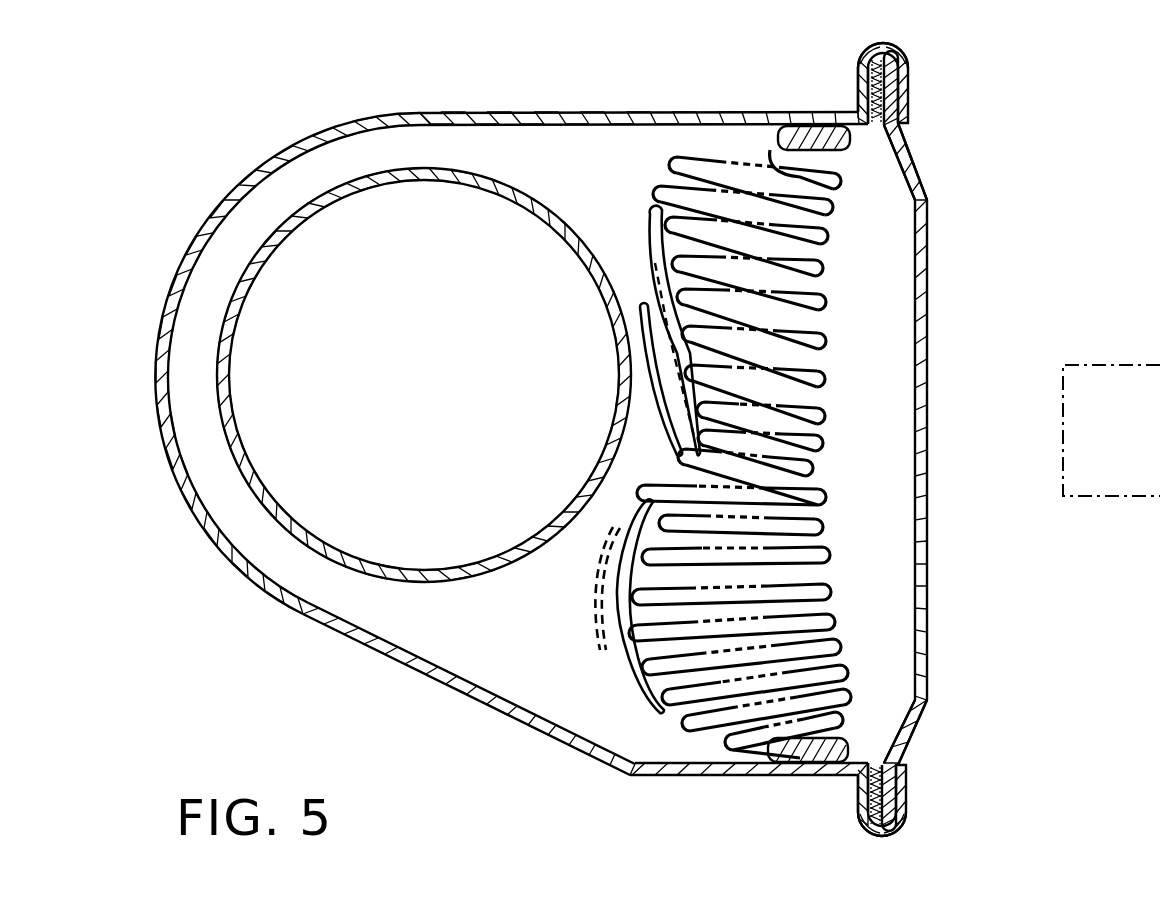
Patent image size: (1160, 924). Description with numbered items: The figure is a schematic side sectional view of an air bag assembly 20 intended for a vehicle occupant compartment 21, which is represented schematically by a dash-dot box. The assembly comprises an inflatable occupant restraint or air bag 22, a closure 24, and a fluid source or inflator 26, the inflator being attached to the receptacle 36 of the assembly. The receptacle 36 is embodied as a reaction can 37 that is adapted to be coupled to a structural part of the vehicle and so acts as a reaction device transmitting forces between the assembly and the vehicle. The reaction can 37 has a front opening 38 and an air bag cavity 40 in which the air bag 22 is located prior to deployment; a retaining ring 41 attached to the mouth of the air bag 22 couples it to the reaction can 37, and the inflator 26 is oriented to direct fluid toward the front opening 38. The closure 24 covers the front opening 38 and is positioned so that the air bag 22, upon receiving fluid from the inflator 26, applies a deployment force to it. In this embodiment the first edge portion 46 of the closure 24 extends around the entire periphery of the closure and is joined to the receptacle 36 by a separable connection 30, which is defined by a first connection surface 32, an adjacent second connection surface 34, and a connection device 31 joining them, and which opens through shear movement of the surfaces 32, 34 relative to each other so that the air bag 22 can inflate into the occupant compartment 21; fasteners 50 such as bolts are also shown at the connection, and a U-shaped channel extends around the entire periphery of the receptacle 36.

The air bag assembly 20 is at (511, 422).
The vehicle occupant compartment 21 is at (1133, 451).
The inflatable occupant restraint (air bag) 22 is at (648, 250).
The closure 24 is at (936, 368).
The fluid source (inflator) 26 is at (505, 180).
The separable connection 30 is at (916, 64).
The connection device 31 is at (882, 46).
The first connection surface 32 is at (900, 86).
The second connection surface 34 is at (870, 100).
The receptacle 36 is at (529, 732).
The reaction can 37 is at (374, 652).
The front opening 38 is at (888, 406).
The air bag cavity 40 is at (680, 758).
The retaining ring 41 is at (780, 130).
The first edge portion 46 is at (902, 128).
The fasteners (bolts) 50 is at (862, 52).